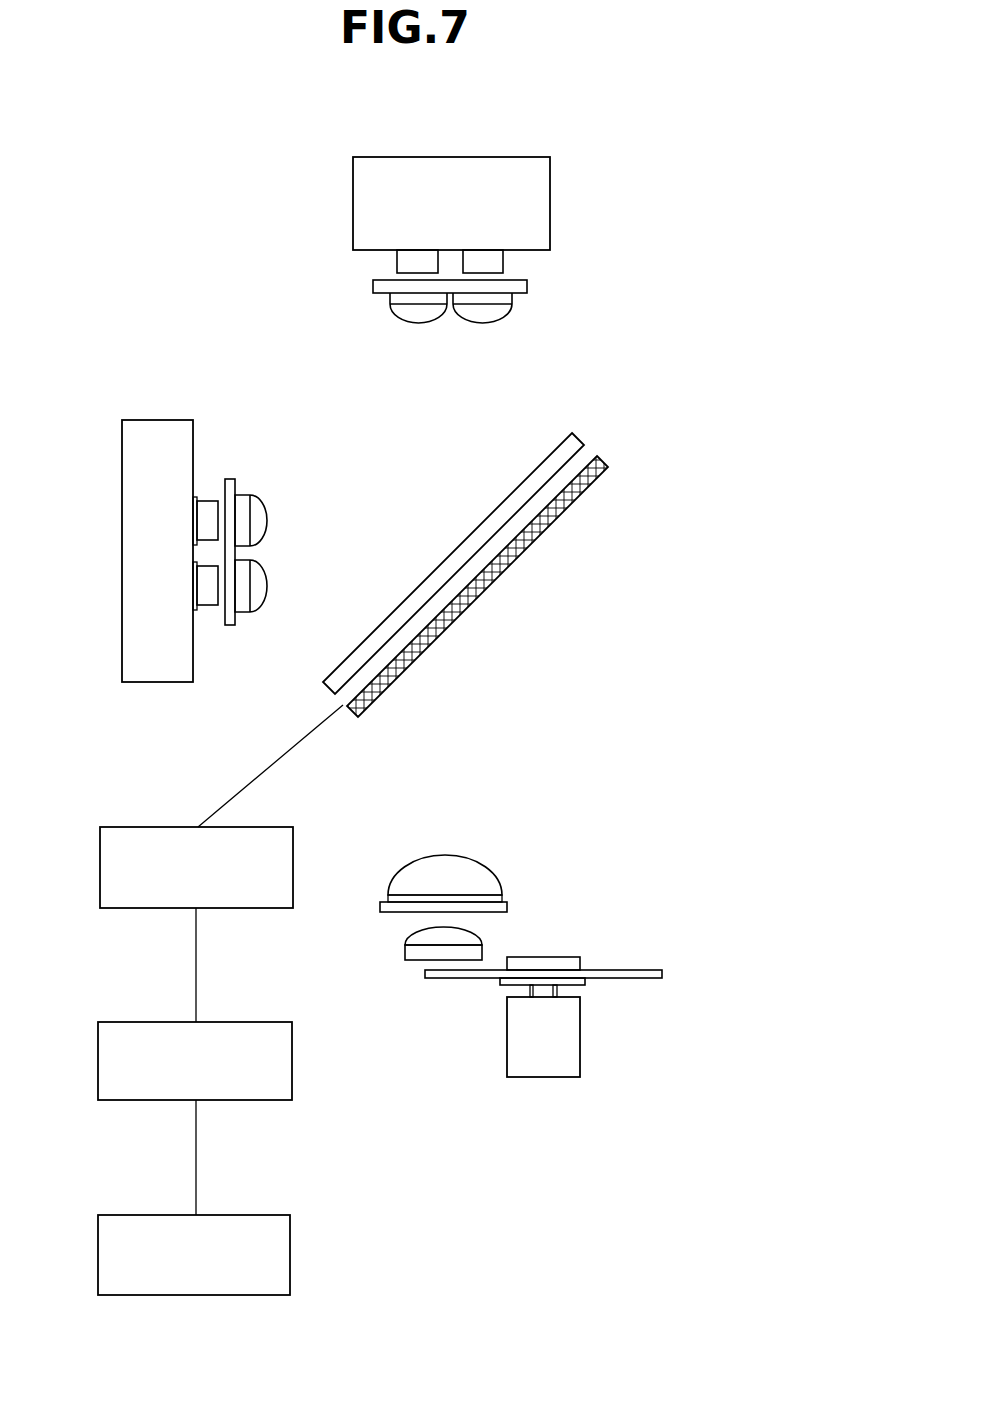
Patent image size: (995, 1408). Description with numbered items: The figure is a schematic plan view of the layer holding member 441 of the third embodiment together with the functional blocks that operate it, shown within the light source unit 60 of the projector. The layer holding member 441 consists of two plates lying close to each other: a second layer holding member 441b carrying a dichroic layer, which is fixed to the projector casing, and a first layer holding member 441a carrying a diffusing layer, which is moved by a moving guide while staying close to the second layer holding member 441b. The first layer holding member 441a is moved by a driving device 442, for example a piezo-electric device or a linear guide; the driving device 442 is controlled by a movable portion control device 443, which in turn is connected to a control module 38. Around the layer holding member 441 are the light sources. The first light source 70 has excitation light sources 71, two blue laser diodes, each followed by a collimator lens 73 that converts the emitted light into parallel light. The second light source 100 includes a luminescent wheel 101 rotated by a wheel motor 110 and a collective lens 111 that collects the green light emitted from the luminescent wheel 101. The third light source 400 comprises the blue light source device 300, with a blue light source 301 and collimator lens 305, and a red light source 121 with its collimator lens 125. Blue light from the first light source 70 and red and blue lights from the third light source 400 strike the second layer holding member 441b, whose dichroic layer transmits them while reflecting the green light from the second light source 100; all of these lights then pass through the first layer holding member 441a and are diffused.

The control module 38 is at (232, 1215).
The light source unit 60 is at (748, 378).
The first light source 70 is at (527, 249).
The excitation light sources 71 is at (483, 262).
The collimator lenses 73 is at (480, 310).
The second light source 100 is at (544, 1008).
The luminescent wheel 101 is at (648, 968).
The wheel motor 110 is at (563, 1033).
The collective lens 111 is at (508, 922).
The red light source 121 is at (206, 585).
The collimator lens 125 is at (241, 630).
The blue light source device 300 is at (146, 545).
The blue light source 301 is at (206, 515).
The collimator lens 305 is at (243, 482).
The third light source 400 is at (120, 262).
The layer holding member 441 is at (485, 576).
The first layer holding member 441a is at (555, 520).
The second layer holding member 441b is at (437, 580).
The driving device 442 is at (242, 827).
The movable portion control device 443 is at (225, 1022).